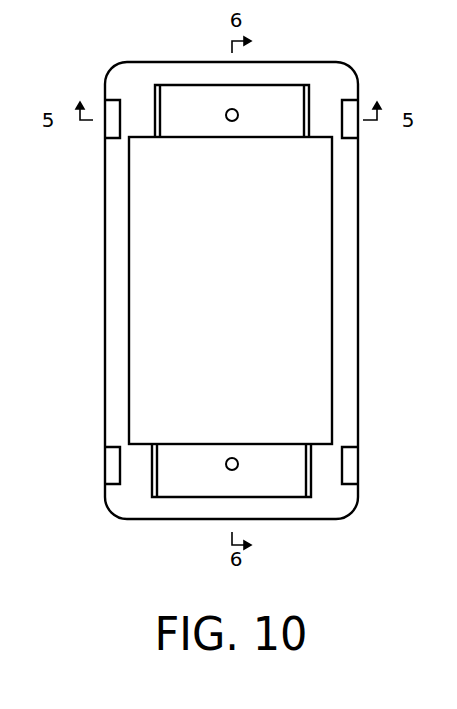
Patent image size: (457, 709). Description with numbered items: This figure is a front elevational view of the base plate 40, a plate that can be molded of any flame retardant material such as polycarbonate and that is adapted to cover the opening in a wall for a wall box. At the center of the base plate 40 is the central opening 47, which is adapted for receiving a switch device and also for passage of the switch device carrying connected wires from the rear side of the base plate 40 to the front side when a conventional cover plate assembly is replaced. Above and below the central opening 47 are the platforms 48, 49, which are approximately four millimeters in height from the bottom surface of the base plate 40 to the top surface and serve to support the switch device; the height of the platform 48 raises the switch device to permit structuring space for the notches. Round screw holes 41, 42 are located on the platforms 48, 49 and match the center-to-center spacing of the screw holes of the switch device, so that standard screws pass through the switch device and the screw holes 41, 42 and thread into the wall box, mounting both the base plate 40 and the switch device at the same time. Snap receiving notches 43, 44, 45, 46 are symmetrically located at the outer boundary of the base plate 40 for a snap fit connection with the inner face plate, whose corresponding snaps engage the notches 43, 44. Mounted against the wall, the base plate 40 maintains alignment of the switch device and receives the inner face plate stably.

The base plate 40 is at (346, 347).
The screw hole 41 is at (242, 112).
The screw hole 42 is at (241, 468).
The snap receiving notch 43 is at (114, 118).
The snap receiving notch 44 is at (363, 122).
The snap receiving notch 45 is at (350, 470).
The snap receiving notch 46 is at (114, 470).
The central opening 47 is at (213, 306).
The platform 48 is at (224, 101).
The platform 49 is at (195, 470).